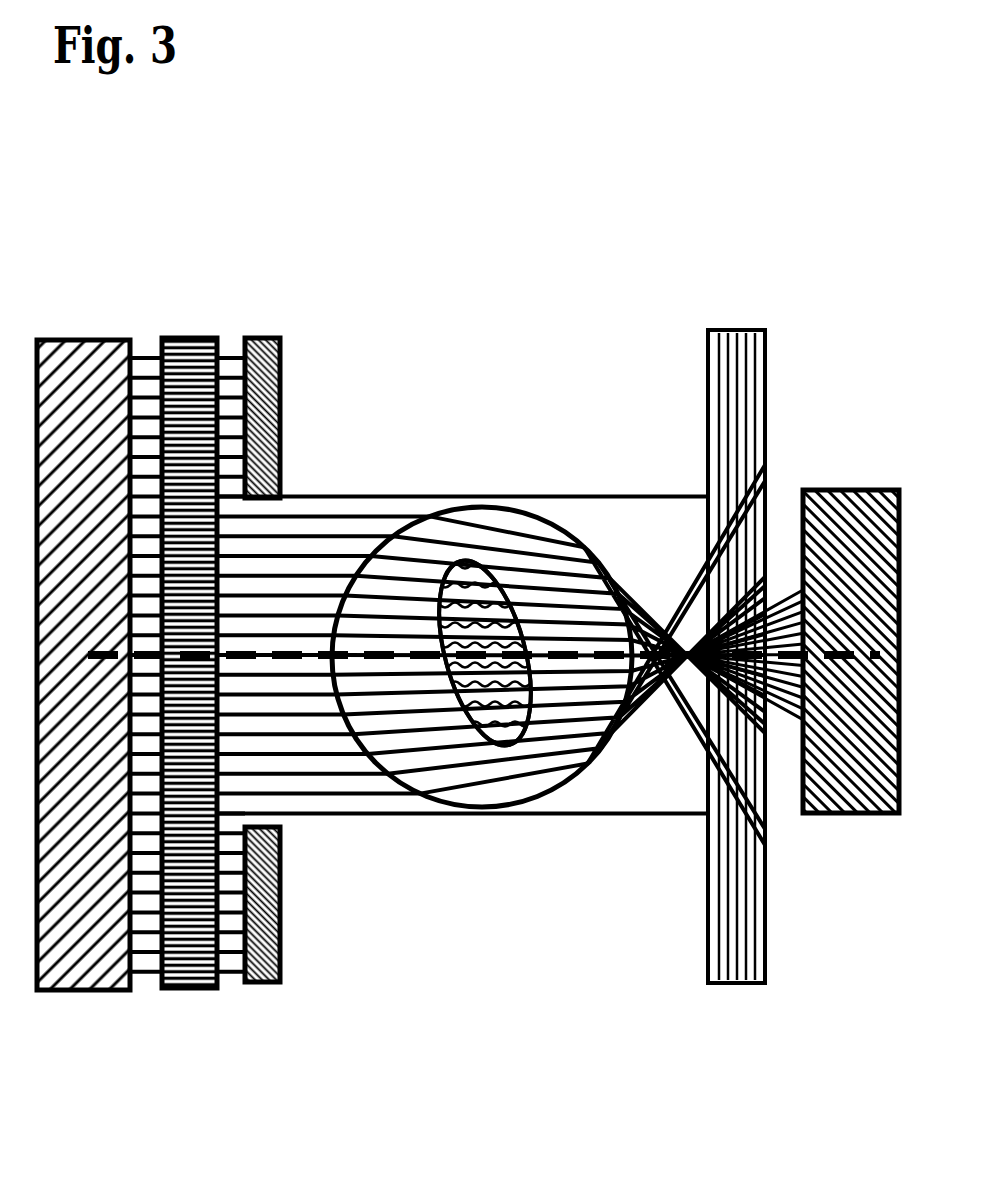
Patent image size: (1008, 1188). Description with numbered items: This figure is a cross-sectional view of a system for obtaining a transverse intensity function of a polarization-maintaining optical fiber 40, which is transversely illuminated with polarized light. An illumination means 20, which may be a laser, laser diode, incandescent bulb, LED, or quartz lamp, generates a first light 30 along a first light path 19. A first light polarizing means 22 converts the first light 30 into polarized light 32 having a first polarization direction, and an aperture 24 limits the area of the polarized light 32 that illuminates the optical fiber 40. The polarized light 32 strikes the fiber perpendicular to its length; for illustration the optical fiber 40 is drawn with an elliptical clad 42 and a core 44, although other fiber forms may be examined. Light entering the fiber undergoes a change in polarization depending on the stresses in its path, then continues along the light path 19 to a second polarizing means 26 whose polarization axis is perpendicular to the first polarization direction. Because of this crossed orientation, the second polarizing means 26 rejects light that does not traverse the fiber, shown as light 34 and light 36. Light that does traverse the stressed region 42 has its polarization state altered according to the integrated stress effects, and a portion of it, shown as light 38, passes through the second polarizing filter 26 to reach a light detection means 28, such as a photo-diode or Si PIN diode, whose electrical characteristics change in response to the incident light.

The first light path 19 is at (293, 657).
The illumination means 20 is at (70, 338).
The first light polarizing means 22 is at (183, 338).
The aperture 24 is at (282, 372).
The second polarizing means 26 is at (728, 328).
The light detection means 28 is at (862, 490).
The first light 30 is at (143, 937).
The polarized light 32 is at (230, 937).
The light not traversing the fiber 34 is at (680, 497).
The light not traversing the fiber 36 is at (688, 668).
The light passing through the second polarizing filter 38 is at (768, 672).
The polarization-maintaining optical fiber 40 is at (530, 507).
The elliptical clad 42 is at (463, 560).
The core 44 is at (522, 630).